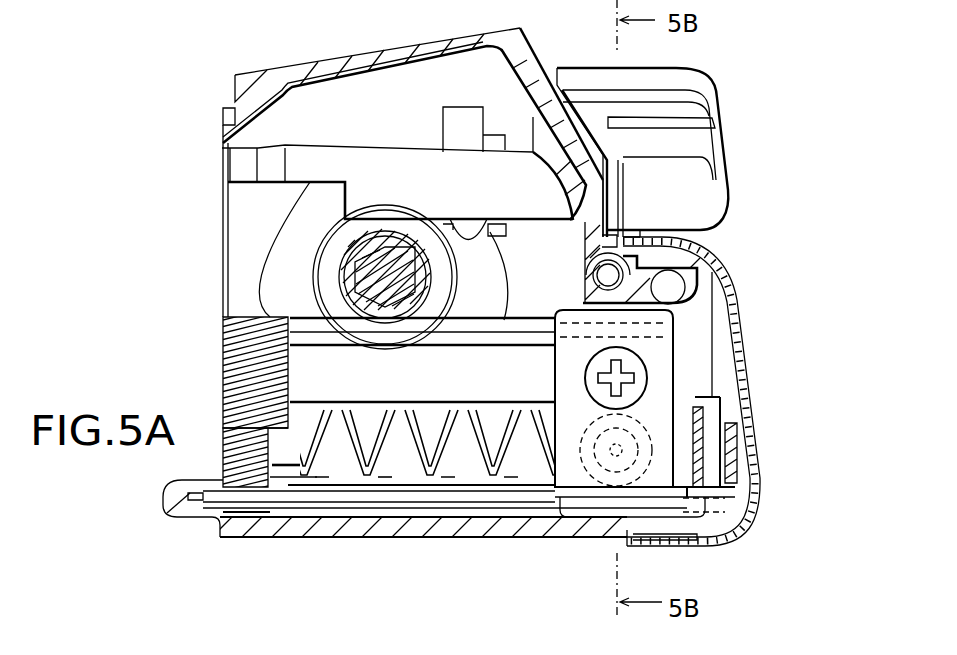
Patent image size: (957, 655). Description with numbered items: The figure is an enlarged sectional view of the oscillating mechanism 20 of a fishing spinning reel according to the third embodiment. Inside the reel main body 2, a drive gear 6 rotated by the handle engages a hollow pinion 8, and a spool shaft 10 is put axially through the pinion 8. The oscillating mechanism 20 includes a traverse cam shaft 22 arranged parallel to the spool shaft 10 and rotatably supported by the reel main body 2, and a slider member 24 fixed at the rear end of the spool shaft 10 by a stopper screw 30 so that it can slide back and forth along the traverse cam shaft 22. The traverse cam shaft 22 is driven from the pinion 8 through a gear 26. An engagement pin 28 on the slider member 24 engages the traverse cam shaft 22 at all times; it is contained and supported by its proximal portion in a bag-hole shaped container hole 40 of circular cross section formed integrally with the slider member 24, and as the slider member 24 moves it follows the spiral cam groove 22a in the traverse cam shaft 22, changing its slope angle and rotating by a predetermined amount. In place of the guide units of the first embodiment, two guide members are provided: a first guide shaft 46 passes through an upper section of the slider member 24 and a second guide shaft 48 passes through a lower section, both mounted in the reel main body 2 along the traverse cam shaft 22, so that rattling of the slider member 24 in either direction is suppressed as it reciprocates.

The reel main body 2 is at (313, 44).
The drive gear 6 is at (280, 222).
The pinion 8 is at (289, 370).
The spool shaft 10 is at (523, 485).
The oscillating mechanism 20 is at (448, 552).
The traverse cam shaft 22 is at (386, 484).
The spiral cam groove 22a is at (402, 413).
The slider member 24 is at (688, 362).
The gear 26 is at (272, 460).
The engagement pin 28 is at (596, 487).
The stopper screw 30 is at (585, 380).
The container hole 40 is at (645, 422).
The first guide shaft 46 is at (521, 318).
The second guide shaft 48 is at (385, 508).